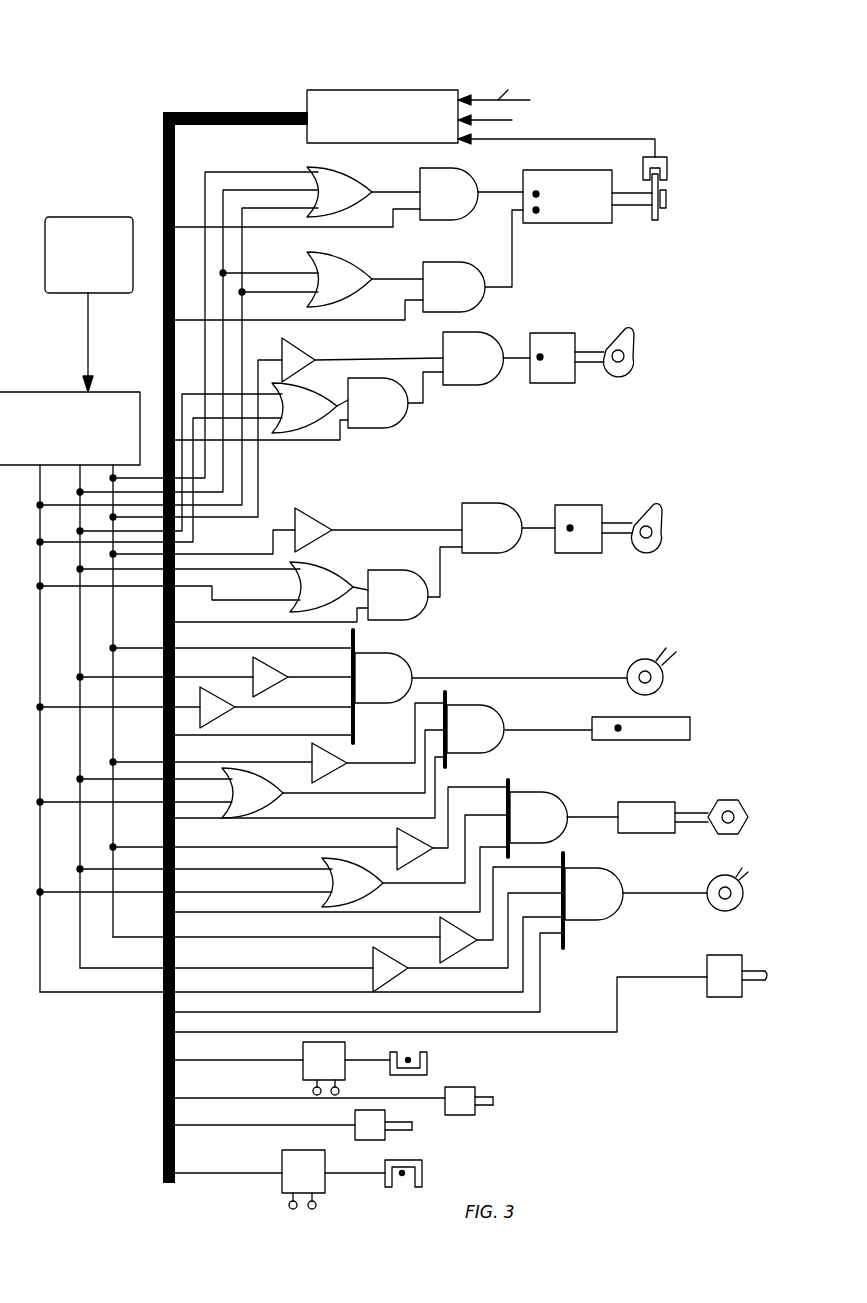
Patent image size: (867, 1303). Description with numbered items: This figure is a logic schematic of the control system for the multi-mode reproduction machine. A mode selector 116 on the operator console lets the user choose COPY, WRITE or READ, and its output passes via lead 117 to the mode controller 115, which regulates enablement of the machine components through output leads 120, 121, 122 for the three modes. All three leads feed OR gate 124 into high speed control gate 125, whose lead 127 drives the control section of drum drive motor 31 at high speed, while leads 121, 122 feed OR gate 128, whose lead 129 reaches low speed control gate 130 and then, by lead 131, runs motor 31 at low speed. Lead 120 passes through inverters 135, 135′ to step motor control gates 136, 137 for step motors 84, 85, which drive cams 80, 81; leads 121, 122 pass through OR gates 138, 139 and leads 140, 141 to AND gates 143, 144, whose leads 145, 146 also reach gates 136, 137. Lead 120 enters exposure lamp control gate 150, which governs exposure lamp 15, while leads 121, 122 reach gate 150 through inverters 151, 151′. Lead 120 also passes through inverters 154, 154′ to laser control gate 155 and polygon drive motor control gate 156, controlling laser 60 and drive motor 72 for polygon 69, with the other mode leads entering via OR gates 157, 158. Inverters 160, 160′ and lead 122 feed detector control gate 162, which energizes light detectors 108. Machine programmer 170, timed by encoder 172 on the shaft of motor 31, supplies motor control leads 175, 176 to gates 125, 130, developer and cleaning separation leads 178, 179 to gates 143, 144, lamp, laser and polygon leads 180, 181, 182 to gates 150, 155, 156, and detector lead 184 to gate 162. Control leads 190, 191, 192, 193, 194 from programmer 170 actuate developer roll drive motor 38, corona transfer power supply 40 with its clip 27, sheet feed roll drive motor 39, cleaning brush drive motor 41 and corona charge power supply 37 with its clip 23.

The machine programmer 170 is at (425, 90).
The encoder 172 is at (668, 156).
The drum drive motor 31 is at (576, 170).
The mode selector 116 is at (125, 293).
The lead 117 is at (88, 345).
The mode controller 115 is at (104, 392).
The output lead (MODE I) 120 is at (232, 170).
The output lead (MODE II) 121 is at (272, 182).
The output lead (MODE III) 122 is at (244, 252).
The OR gate 124 is at (378, 184).
The high speed control gate 125 is at (462, 170).
The lead 127 is at (490, 190).
The OR gate 128 is at (340, 254).
The lead 129 is at (392, 278).
The low speed control gate 130 is at (456, 262).
The lead 131 is at (513, 268).
The motor control output lead 175 is at (398, 228).
The motor control output lead 176 is at (414, 314).
The inverter 135 is at (314, 344).
The inverter 135′ is at (316, 520).
The OR gate 138 is at (330, 400).
The lead 140 is at (358, 428).
The AND gate 143 is at (398, 432).
The lead 145 is at (423, 408).
The developer separation control lead 178 is at (326, 440).
The step motor control gate 136 is at (490, 332).
The step motor 84 is at (562, 330).
The cam 80 is at (630, 330).
The step motor control gate 137 is at (516, 490).
The step motor 85 is at (585, 506).
The cam 81 is at (647, 504).
The OR gate 139 is at (350, 574).
The lead 141 is at (368, 584).
The AND gate 144 is at (430, 618).
The lead 146 is at (450, 598).
The cleaning separation control lead 179 is at (306, 628).
The exposure lamp control gate 150 is at (428, 664).
The inverter 151 is at (296, 672).
The inverter 151′ is at (210, 700).
The exposure lamp control lead 180 is at (248, 736).
The exposure lamp 15 is at (633, 690).
The laser control gate 155 is at (514, 712).
The inverter 154 is at (352, 756).
The inverter 154′ is at (416, 830).
The OR gate 157 is at (286, 800).
The laser control lead 181 is at (372, 818).
The laser 60 is at (686, 724).
The polygon drive motor control gate 156 is at (553, 802).
The drive motor 72 is at (672, 774).
The polygon 69 is at (736, 796).
The OR gate 158 is at (378, 888).
The polygon drive motor control lead 182 is at (300, 910).
The detector control gate 162 is at (626, 886).
The inverter 160 is at (434, 932).
The inverter 160′ is at (366, 958).
The detector control lead 184 is at (524, 1012).
The light detector 108 is at (711, 904).
The control lead 190 is at (628, 976).
The developer roll drive motor 38 is at (728, 998).
The control lead 191 is at (246, 1056).
The corona transfer means power supply 40 is at (308, 1054).
The clip 27 is at (427, 1062).
The control lead 192 is at (254, 1098).
The sheet feed roll drive motor 39 is at (466, 1088).
The control lead 193 is at (318, 1124).
The cleaning brush drive motor 41 is at (378, 1120).
The control lead 194 is at (252, 1172).
The corona charge means power supply 37 is at (316, 1174).
The clip 23 is at (428, 1168).